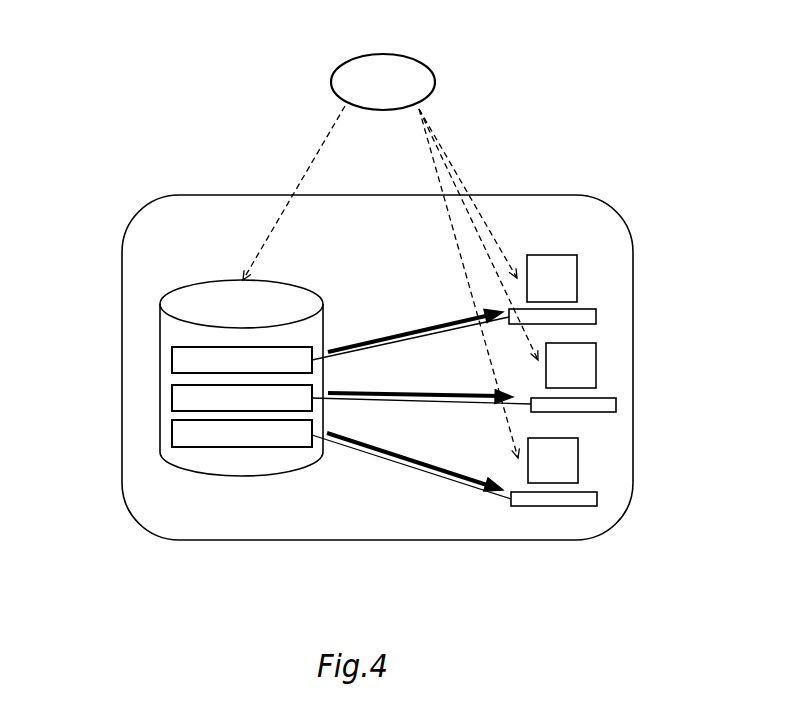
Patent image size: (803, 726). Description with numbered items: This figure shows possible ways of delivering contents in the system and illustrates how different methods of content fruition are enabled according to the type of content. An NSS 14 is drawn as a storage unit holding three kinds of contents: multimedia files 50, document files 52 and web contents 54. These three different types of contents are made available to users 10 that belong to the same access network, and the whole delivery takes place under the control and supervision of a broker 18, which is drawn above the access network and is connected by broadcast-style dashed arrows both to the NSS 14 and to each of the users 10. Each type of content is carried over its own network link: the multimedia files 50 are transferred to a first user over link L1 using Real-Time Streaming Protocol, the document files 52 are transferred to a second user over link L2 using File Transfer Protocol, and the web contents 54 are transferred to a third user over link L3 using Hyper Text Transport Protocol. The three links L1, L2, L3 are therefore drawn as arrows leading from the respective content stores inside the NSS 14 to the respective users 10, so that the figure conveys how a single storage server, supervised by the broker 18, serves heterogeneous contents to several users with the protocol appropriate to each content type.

The users 10 is at (584, 278).
The NSS 14 is at (206, 476).
The broker 18 is at (435, 78).
The multimedia files 50 is at (173, 360).
The document files 52 is at (173, 398).
The web contents 54 is at (173, 435).
The network link L1 is at (408, 332).
The network link L2 is at (398, 390).
The network link L3 is at (427, 468).